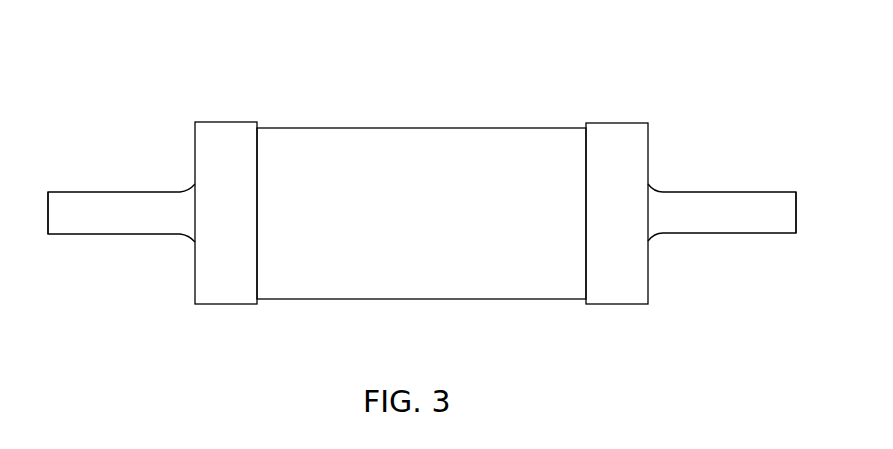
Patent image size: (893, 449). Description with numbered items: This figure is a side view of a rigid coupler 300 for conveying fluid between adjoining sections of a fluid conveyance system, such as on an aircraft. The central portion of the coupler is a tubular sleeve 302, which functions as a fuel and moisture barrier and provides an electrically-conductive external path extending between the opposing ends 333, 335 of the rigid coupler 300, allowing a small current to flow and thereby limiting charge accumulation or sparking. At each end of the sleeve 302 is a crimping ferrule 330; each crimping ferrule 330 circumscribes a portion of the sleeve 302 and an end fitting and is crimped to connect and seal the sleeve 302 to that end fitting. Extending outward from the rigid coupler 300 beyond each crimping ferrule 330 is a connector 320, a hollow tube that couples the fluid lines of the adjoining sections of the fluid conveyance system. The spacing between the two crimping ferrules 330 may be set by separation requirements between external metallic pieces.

The rigid coupler 300 is at (150, 40).
The tubular sleeve 302 is at (502, 127).
The connector 320 is at (87, 191).
The crimping ferrule 330 is at (227, 122).
The end 333 is at (48, 205).
The end 335 is at (797, 203).